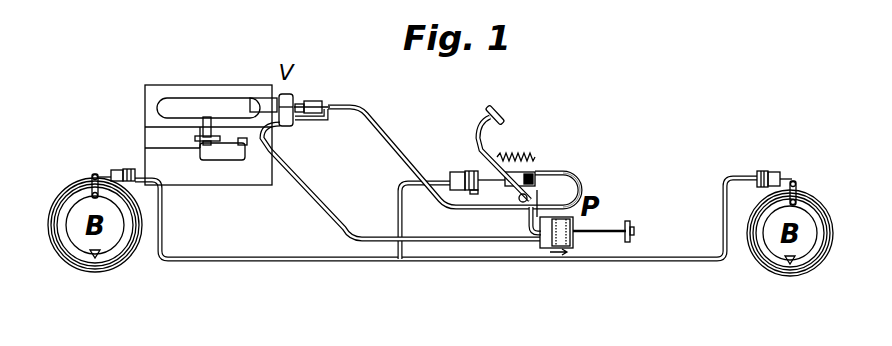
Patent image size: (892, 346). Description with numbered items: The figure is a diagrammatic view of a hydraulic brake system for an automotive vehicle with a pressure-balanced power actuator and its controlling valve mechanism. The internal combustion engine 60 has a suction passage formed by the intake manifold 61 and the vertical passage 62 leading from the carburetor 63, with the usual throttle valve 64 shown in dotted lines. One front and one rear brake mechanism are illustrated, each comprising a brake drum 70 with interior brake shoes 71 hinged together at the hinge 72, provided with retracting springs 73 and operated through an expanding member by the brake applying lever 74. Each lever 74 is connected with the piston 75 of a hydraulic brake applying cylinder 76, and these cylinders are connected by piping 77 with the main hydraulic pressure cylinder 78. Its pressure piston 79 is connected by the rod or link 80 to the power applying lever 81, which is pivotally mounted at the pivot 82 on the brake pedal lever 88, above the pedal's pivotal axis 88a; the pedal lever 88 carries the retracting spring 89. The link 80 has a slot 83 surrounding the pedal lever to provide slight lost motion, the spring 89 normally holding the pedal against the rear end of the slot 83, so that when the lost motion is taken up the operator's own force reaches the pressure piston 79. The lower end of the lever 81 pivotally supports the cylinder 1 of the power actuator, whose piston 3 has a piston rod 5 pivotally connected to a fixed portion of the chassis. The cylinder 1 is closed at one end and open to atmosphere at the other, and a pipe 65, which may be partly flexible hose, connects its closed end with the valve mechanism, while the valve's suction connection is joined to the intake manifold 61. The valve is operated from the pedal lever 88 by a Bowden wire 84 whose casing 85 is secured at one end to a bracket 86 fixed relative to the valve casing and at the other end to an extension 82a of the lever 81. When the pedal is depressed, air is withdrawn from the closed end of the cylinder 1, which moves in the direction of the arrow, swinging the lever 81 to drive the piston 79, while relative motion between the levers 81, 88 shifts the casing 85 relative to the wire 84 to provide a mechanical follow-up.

The cylinder 1 is at (547, 250).
The piston 3 is at (600, 229).
The piston rod 5 is at (627, 226).
The internal combustion engine 60 is at (233, 87).
The intake manifold 61 is at (195, 98).
The vertical passage 62 is at (195, 136).
The carburetor 63 is at (242, 160).
The throttle valve 64 is at (200, 128).
The pipe 65 is at (338, 222).
The brake drum 70 is at (102, 271).
The brake shoes 71 is at (62, 256).
The hinge 72 is at (90, 263).
The retracting springs 73 is at (93, 197).
The brake applying lever 74 is at (91, 176).
The piston 75 is at (114, 170).
The hydraulic brake applying cylinder 76 is at (130, 169).
The piping 77 is at (631, 261).
The main hydraulic pressure cylinder 78 is at (452, 172).
The pressure piston 79 is at (470, 171).
The rod or link 80 is at (478, 190).
The power applying lever 81 is at (539, 203).
The pivot 82 is at (574, 182).
The extension 82a is at (536, 176).
The slot 83 is at (518, 198).
The Bowden wire 84 is at (318, 101).
The casing 85 is at (390, 147).
The bracket 86 is at (308, 121).
The brake pedal lever 88 is at (485, 120).
The pivotal axis 88a is at (528, 215).
The retracting spring 89 is at (512, 153).